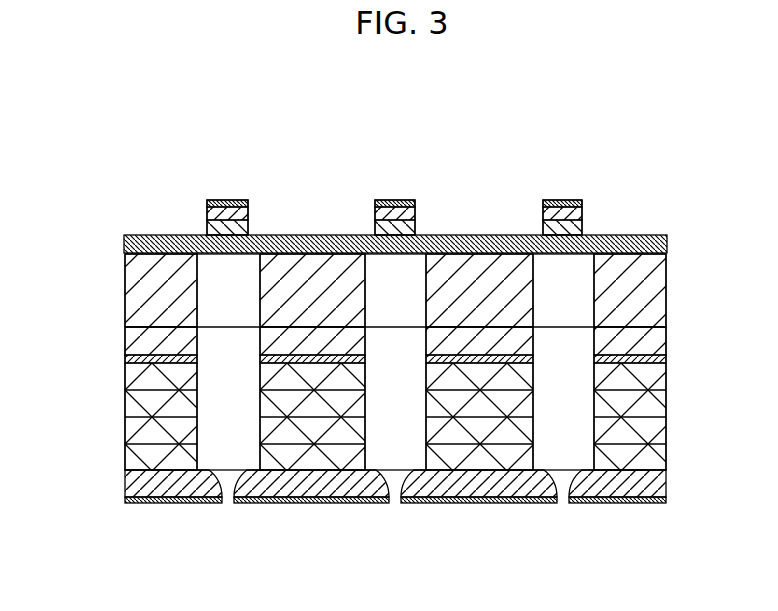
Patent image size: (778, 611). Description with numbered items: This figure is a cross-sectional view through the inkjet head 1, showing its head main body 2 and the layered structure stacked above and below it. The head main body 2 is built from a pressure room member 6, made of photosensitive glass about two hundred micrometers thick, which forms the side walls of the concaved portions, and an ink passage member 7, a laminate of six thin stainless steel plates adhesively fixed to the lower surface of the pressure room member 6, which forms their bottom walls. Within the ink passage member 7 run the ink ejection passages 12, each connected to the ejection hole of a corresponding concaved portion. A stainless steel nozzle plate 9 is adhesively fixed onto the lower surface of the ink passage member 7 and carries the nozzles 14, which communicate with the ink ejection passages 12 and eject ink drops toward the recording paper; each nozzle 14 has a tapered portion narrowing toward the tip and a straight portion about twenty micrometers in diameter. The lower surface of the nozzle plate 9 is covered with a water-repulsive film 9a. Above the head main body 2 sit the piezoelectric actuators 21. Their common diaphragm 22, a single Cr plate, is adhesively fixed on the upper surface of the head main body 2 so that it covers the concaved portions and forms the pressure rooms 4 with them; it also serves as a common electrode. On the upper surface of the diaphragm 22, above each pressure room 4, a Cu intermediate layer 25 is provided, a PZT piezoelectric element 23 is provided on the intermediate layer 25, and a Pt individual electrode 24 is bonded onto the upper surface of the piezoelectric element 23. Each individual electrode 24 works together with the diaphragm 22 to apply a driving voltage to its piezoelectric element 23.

The inkjet head 1 is at (114, 94).
The head main body 2 is at (96, 356).
The pressure room 4 is at (220, 297).
The pressure room member 6 is at (668, 288).
The ink passage member 7 is at (681, 327).
The nozzle plate 9 is at (668, 485).
The water-repulsive film 9a is at (668, 500).
The ink ejection passage 12 is at (213, 399).
The nozzle 14 is at (230, 506).
The piezoelectric actuator 21 is at (226, 194).
The diaphragm 22 is at (668, 237).
The piezoelectric element 23 is at (248, 213).
The individual electrode 24 is at (240, 204).
The intermediate layer 25 is at (248, 228).